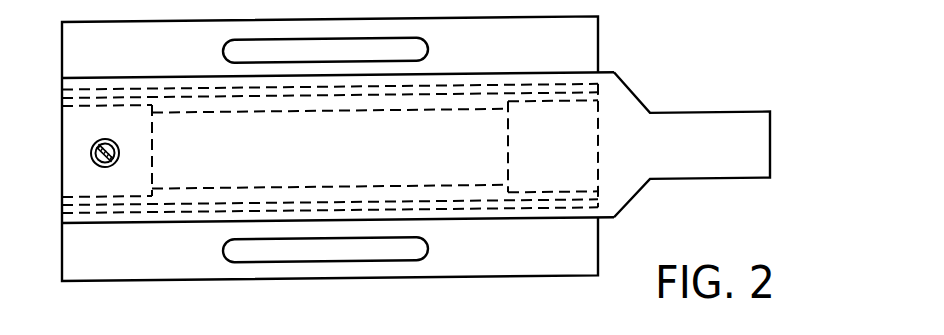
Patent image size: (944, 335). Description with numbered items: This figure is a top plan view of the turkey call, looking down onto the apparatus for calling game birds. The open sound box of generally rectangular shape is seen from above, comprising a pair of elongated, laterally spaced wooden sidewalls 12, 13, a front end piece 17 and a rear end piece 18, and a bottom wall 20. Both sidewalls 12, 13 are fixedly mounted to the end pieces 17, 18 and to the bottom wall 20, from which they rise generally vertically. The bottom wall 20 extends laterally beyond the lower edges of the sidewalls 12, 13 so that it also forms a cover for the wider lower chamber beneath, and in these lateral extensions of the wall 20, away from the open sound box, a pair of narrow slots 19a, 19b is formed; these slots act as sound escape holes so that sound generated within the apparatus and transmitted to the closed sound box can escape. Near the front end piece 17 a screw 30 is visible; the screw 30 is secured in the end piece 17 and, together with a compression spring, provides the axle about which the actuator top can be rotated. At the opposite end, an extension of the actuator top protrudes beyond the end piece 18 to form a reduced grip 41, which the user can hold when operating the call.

The bottom wall 20 is at (573, 50).
The reduced grip 41 is at (711, 178).
The narrow slot 19a is at (431, 244).
The narrow slot 19b is at (429, 42).
The rear end piece 18 is at (562, 152).
The front end piece 17 is at (80, 160).
The sidewall 13 is at (310, 108).
The sidewall 12 is at (362, 193).
The screw 30 is at (119, 152).